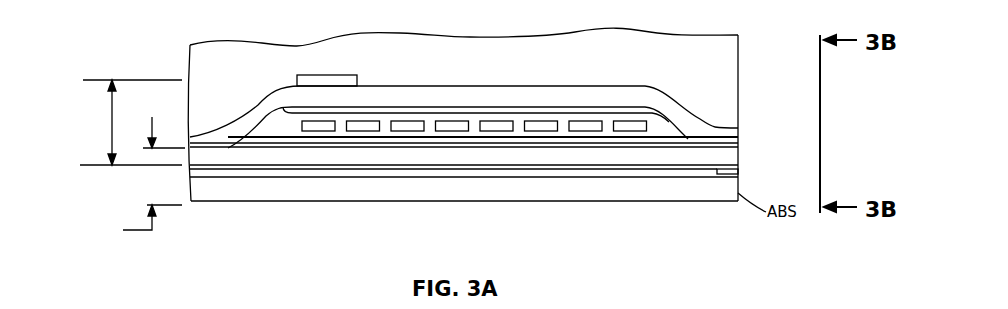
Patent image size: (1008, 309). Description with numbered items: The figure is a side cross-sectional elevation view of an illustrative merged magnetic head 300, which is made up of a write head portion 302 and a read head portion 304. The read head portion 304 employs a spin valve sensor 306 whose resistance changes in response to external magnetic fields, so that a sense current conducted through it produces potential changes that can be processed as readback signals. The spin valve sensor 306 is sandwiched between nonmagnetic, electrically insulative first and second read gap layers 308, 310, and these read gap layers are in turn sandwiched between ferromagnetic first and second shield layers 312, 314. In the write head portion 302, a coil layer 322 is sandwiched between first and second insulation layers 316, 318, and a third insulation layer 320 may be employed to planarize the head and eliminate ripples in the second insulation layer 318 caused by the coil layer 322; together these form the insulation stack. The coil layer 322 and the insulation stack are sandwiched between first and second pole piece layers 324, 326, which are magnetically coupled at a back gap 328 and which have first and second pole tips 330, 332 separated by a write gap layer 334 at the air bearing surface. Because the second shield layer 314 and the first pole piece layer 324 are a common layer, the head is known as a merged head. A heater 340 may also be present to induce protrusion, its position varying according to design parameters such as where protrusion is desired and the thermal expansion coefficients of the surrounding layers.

The merged magnetic head 300 is at (171, 57).
The write head portion 302 is at (102, 122).
The read head portion 304 is at (112, 236).
The spin valve sensor 306 is at (733, 173).
The first read gap layer 308 is at (508, 178).
The second read gap layer 310 is at (464, 165).
The first shield layer 312 is at (558, 192).
The second shield layer 314 is at (464, 193).
The first pole piece layer 324 is at (630, 158).
The first insulation layer 316 is at (413, 138).
The second insulation layer 318 is at (657, 123).
The third insulation layer 320 is at (388, 105).
The coil layer 322 is at (494, 127).
The second pole piece layer 326 is at (568, 95).
The back gap 328 is at (217, 147).
The first pole tip 330 is at (733, 157).
The second pole tip 332 is at (735, 134).
The write gap layer 334 is at (737, 145).
The heater 340 is at (317, 74).